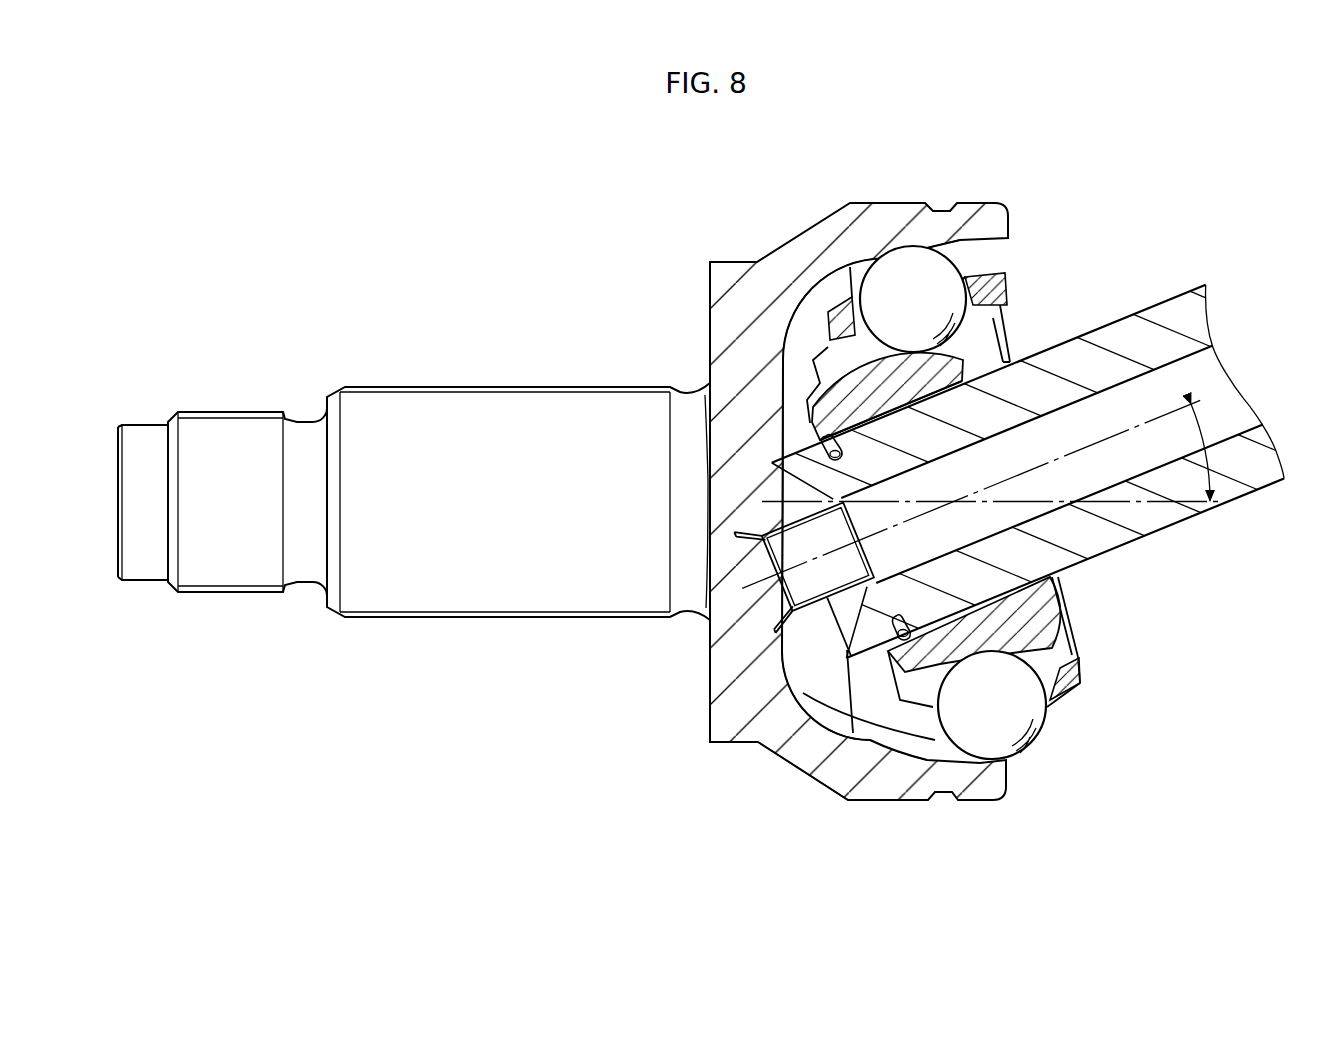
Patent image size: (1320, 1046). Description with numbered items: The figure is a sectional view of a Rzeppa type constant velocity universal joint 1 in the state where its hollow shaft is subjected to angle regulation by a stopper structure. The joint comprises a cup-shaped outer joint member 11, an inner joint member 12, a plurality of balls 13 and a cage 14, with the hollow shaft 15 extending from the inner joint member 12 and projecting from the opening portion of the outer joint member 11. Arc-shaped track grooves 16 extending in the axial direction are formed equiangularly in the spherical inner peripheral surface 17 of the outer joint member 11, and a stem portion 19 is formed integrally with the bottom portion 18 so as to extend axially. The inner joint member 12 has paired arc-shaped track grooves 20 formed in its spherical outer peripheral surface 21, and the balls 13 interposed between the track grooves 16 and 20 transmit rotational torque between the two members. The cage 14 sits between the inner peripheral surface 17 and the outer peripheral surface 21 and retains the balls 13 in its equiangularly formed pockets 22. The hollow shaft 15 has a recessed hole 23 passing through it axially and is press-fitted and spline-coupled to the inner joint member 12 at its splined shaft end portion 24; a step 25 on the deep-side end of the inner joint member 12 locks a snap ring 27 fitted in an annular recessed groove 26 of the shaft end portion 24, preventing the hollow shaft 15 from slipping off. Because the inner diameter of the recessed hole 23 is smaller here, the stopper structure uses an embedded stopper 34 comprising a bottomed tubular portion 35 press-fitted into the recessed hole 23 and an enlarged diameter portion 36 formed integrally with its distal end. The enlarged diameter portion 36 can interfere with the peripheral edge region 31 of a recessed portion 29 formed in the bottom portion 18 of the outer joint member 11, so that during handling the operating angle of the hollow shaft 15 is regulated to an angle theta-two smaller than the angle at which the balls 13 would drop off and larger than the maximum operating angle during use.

The constant velocity universal joint 1 is at (646, 229).
The outer joint member 11 is at (800, 231).
The inner joint member 12 is at (968, 362).
The balls 13 is at (1038, 747).
The cage 14 is at (1084, 692).
The hollow shaft 15 is at (1179, 533).
The track grooves 16 is at (975, 255).
The spherical inner peripheral surface 17 is at (880, 708).
The bottom portion 18 is at (738, 738).
The stem portion 19 is at (463, 396).
The track grooves 20 is at (1053, 641).
The spherical outer peripheral surface 21 is at (1082, 677).
The pockets 22 is at (985, 712).
The recessed hole 23 is at (1118, 392).
The shaft end portion 24 is at (857, 622).
The step 25 is at (826, 440).
The recessed groove 26 is at (846, 450).
The snap ring 27 is at (900, 616).
The recessed portion 29 is at (733, 509).
The peripheral edge region 31 is at (780, 372).
The embedded stopper 34 is at (873, 546).
The bottomed tubular portion 35 is at (742, 552).
The enlarged diameter portion 36 is at (765, 677).